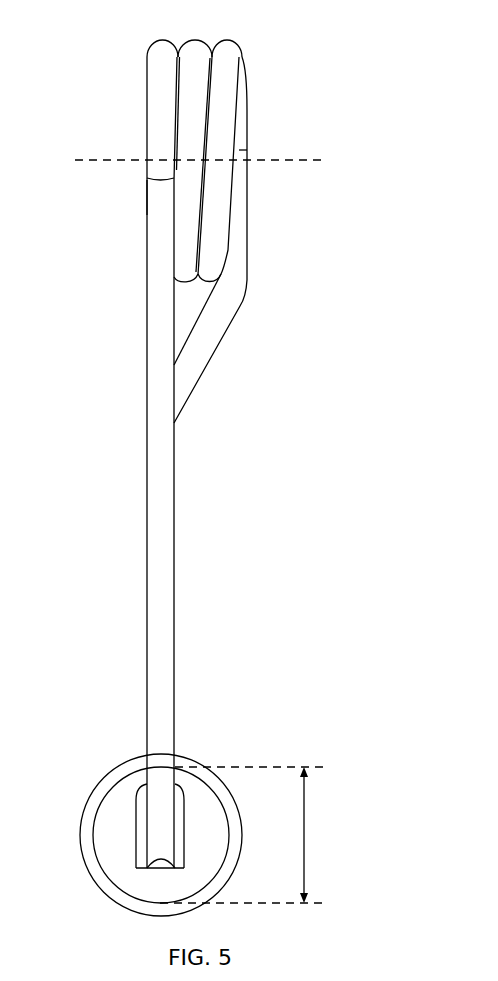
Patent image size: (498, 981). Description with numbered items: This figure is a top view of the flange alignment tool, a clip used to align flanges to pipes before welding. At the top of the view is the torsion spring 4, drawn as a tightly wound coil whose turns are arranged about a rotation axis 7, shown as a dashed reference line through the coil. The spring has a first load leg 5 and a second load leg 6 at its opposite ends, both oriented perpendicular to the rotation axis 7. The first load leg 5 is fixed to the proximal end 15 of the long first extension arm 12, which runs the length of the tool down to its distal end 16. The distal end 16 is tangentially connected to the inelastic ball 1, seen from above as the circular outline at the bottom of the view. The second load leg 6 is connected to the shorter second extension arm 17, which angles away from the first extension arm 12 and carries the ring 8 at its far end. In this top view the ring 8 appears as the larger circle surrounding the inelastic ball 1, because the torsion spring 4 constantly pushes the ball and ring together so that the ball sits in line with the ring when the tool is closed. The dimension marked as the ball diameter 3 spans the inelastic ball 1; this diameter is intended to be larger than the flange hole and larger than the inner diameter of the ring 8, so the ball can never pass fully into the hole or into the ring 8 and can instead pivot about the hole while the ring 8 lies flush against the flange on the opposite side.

The inelastic ball 1 is at (93, 833).
The ball diameter 3 is at (305, 838).
The torsion spring 4 is at (257, 72).
The first load leg 5 is at (148, 152).
The second load leg 6 is at (246, 151).
The rotation axis 7 is at (294, 163).
The ring 8 is at (104, 784).
The first extension arm 12 is at (147, 325).
The proximal end 15 is at (145, 196).
The distal end 16 is at (144, 850).
The second extension arm 17 is at (203, 372).